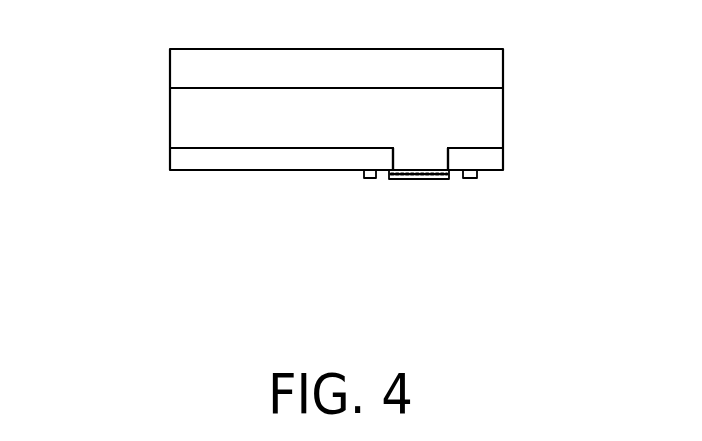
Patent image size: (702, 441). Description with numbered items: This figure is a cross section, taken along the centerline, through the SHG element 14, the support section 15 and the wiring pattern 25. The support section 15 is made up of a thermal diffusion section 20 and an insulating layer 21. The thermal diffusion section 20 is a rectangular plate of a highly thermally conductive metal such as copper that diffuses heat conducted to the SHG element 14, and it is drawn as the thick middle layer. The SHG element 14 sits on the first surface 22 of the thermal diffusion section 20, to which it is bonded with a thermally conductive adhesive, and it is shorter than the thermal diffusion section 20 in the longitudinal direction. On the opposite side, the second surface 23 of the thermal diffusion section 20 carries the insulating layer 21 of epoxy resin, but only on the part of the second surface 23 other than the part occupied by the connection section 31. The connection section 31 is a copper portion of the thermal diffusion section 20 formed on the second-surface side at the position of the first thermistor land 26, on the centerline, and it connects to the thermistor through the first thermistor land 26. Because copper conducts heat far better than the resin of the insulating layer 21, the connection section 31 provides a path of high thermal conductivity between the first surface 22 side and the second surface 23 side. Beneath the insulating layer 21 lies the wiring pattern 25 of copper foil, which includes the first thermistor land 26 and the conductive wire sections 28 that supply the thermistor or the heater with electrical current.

The SHG element 14 is at (173, 73).
The support section 15 is at (92, 100).
The thermal diffusion section 20 is at (173, 122).
The insulating layer 21 is at (173, 165).
The first surface 22 is at (477, 87).
The second surface 23 is at (485, 150).
The wiring pattern 25 is at (502, 248).
The first thermistor land 26 is at (417, 179).
The conductive wire sections 28 is at (368, 179).
The connection section 31 is at (418, 152).